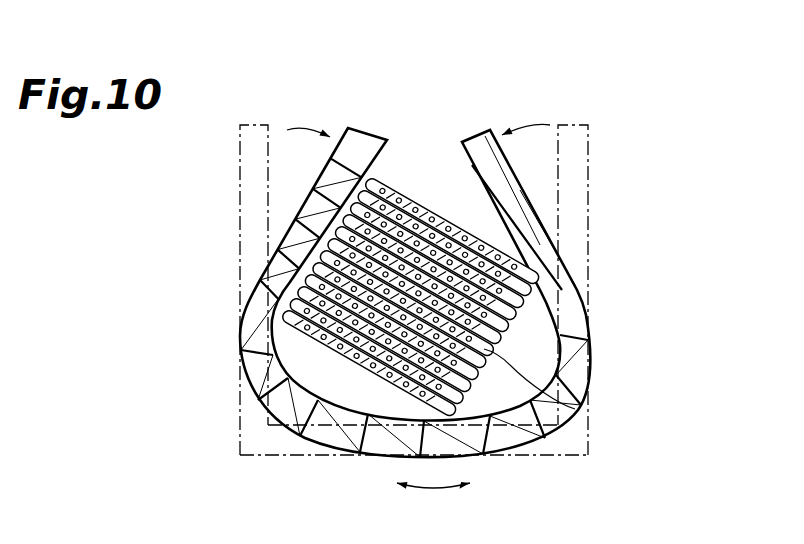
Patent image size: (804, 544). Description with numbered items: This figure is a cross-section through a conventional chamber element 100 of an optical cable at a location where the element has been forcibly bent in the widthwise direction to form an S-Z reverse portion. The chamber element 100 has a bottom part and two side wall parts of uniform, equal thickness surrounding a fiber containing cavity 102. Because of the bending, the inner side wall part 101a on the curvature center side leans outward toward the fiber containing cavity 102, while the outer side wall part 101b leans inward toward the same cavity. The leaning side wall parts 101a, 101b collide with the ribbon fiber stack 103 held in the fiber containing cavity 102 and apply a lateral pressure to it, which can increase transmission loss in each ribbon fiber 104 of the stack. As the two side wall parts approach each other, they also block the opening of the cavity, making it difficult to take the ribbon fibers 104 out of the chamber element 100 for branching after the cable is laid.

The chamber element 100 is at (587, 103).
The inner side wall part 101a is at (300, 234).
The outer side wall part 101b is at (553, 258).
The fiber containing cavity 102 is at (468, 217).
The ribbon fiber stack 103 is at (512, 328).
The ribbon fiber 104 is at (575, 409).